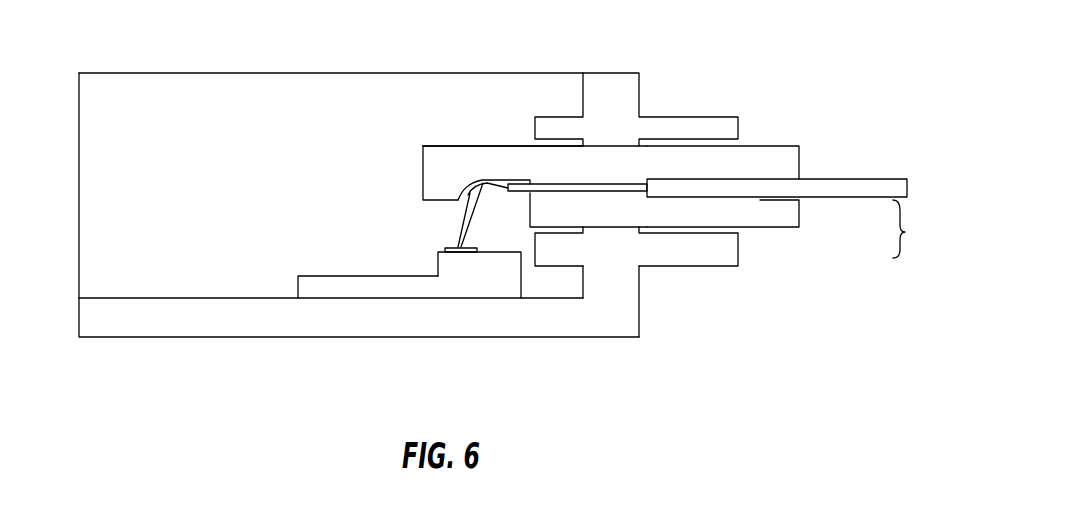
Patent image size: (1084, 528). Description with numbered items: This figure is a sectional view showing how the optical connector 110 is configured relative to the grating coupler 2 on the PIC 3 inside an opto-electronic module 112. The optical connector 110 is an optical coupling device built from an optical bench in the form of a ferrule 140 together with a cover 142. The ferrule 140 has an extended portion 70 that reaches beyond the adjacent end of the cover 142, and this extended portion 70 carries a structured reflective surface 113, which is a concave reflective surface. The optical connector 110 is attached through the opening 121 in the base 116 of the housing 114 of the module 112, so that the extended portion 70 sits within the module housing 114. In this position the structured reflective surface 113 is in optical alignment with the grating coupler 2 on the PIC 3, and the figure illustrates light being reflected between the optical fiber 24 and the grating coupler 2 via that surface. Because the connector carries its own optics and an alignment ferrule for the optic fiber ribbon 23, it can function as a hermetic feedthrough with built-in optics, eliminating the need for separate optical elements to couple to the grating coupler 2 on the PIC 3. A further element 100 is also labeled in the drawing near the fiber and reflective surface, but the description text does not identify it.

The grating coupler 2 is at (458, 252).
The PIC 3 is at (495, 265).
The optic fiber ribbon 23 is at (862, 185).
The optical fiber 24 is at (623, 186).
The extended portion 70 is at (443, 157).
The bond wire 100 is at (456, 235).
The optical connector 110 is at (923, 229).
The opto-electronic module 112 is at (342, 384).
The structured reflective surface 113 is at (463, 200).
The housing 114 is at (214, 317).
The base 116 is at (627, 292).
The opening 121 is at (513, 160).
The ferrule 140 is at (800, 162).
The cover 142 is at (799, 208).